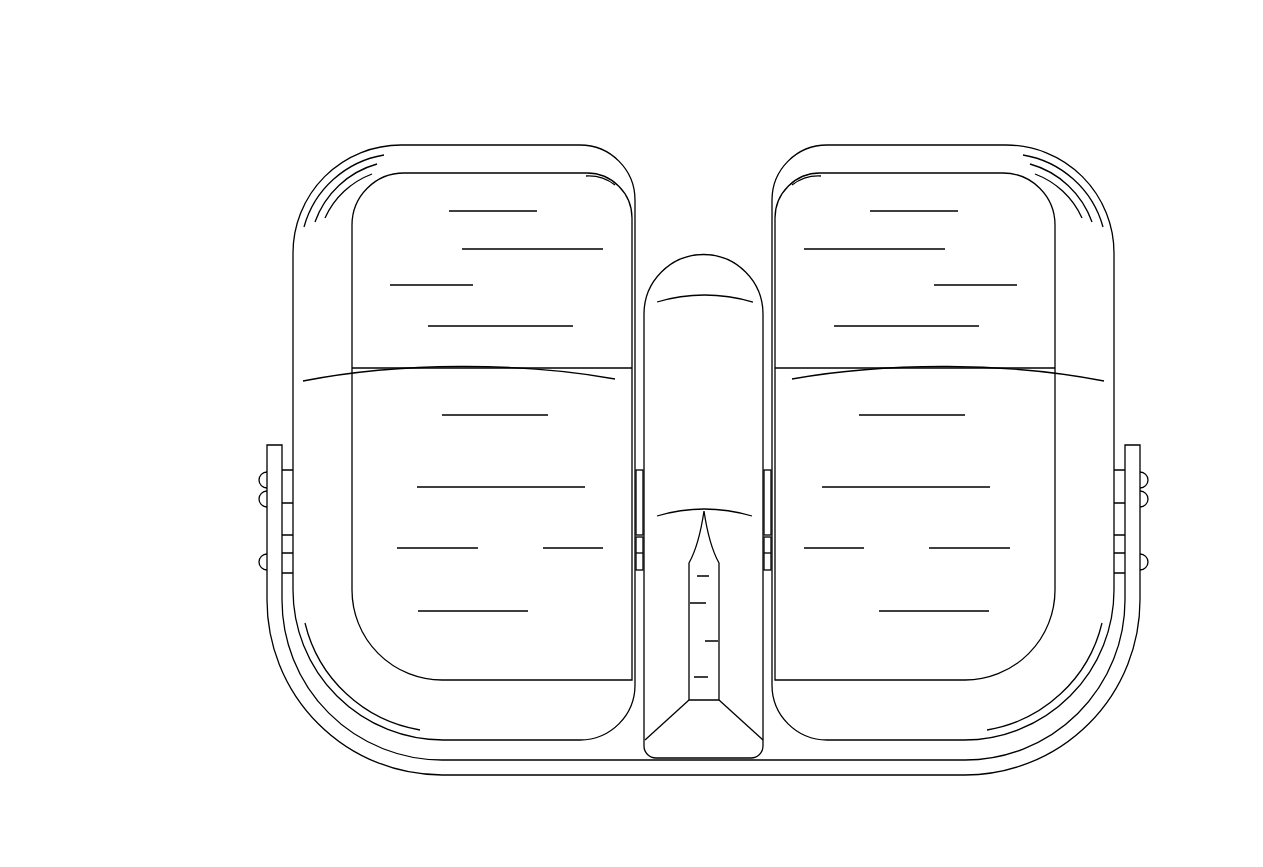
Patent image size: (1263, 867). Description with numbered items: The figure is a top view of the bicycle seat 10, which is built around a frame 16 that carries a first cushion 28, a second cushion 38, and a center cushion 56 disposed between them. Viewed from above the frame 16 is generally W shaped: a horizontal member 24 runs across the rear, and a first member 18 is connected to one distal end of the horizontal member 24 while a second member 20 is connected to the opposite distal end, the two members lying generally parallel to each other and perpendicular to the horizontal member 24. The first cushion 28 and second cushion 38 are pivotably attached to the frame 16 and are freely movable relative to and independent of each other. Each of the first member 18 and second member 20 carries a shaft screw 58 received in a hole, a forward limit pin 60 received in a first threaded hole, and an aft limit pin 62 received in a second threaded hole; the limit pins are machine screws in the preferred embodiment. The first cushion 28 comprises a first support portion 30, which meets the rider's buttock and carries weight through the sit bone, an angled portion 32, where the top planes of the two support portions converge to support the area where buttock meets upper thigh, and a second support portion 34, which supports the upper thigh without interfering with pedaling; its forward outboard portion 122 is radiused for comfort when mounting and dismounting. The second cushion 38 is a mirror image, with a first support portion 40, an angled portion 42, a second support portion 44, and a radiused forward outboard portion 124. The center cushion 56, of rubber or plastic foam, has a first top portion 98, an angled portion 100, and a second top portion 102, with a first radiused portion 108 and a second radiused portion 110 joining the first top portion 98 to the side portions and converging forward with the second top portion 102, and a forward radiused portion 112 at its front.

The bicycle seat 10 is at (1127, 125).
The frame 16 is at (296, 707).
The first member 18 is at (267, 527).
The second member 20 is at (1140, 527).
The horizontal member 24 is at (848, 776).
The first cushion 28 is at (430, 137).
The first support portion 30 is at (405, 593).
The angled portion 32 is at (383, 363).
The second support portion 34 is at (507, 200).
The second cushion 38 is at (852, 137).
The first support portion 40 is at (1003, 593).
The angled portion 42 is at (1023, 365).
The second support portion 44 is at (928, 200).
The center cushion 56 is at (686, 255).
The shaft screw 58 is at (258, 503).
The forward limit pin 60 is at (260, 480).
The aft limit pin 62 is at (258, 563).
The first top portion 98 is at (707, 682).
The angled portion 100 is at (680, 505).
The second top portion 102 is at (685, 408).
The first radiused portion 108 is at (655, 698).
The second radiused portion 110 is at (743, 695).
The forward radiused portion 112 is at (705, 255).
The forward outboard portion 122 is at (325, 177).
The forward outboard portion 124 is at (1098, 195).